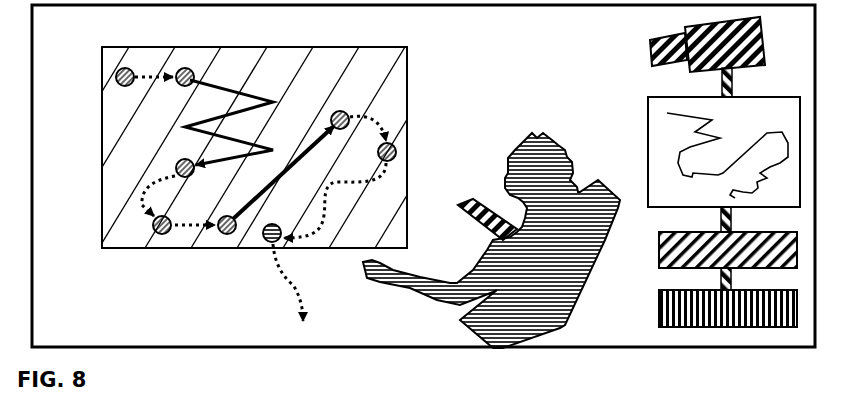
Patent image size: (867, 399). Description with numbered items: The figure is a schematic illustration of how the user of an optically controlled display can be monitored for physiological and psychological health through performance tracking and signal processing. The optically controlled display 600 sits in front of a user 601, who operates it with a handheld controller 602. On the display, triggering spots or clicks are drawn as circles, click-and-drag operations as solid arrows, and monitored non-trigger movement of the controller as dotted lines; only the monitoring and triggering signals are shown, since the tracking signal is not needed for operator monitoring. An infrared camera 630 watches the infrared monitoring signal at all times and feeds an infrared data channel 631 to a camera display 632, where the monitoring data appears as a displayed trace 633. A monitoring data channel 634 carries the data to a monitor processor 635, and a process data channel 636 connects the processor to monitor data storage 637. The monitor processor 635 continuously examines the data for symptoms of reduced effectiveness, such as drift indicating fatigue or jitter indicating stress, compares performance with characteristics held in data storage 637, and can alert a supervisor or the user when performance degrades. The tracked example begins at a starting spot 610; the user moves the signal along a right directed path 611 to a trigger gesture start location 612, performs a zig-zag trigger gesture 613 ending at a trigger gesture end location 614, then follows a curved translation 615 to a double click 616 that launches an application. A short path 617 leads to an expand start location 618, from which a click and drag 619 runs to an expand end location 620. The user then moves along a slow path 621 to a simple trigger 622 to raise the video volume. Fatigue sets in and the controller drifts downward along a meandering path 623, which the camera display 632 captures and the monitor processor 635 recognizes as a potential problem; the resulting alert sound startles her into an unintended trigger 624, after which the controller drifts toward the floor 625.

The optically controlled display 600 is at (118, 53).
The user 601 is at (523, 153).
The controller 602 is at (463, 205).
The starting spot 610 is at (117, 77).
The right directed path 611 is at (150, 74).
The trigger gesture start location 612 is at (188, 70).
The trigger gesture 613 is at (239, 111).
The trigger gesture end location 614 is at (178, 162).
The curved translation 615 is at (145, 183).
The double click 616 is at (150, 220).
The short path 617 is at (187, 230).
The expand start location 618 is at (227, 234).
The click and drag 619 is at (320, 142).
The expand end location 620 is at (340, 114).
The curved dotted path segment 621 is at (378, 125).
The simple trigger 622 is at (395, 148).
The meandering path 623 is at (322, 218).
The unintended trigger 624 is at (276, 238).
The floor 625 is at (300, 302).
The infrared camera 630 is at (762, 45).
The infrared data channel 631 is at (733, 87).
The camera display 632 is at (653, 118).
The displayed image outline 633 is at (763, 135).
The connector 634 is at (722, 227).
The monitor processor 635 is at (670, 238).
The process data channel 636 is at (722, 285).
The monitor data storage 637 is at (670, 305).